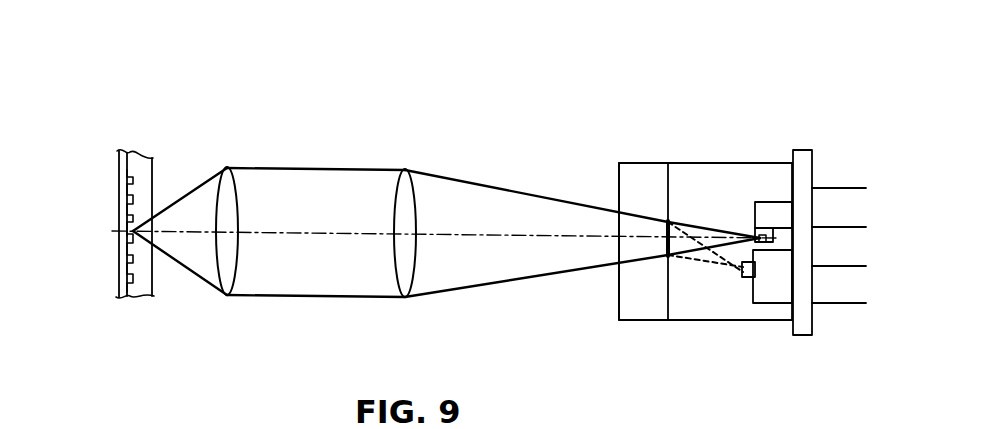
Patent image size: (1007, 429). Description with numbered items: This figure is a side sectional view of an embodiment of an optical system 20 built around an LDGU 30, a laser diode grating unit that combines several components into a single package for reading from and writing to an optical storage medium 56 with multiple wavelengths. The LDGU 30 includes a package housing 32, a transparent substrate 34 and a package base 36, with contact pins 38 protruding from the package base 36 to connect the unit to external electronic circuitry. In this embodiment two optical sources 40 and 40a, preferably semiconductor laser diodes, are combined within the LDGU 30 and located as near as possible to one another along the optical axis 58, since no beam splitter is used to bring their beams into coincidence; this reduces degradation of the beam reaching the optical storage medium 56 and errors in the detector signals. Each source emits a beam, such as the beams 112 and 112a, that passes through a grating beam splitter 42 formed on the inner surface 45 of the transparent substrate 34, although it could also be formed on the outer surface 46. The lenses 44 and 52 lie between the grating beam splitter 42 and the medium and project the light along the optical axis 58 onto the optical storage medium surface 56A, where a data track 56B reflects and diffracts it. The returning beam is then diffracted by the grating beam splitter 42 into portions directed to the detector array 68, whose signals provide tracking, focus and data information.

The optical system 20 is at (294, 195).
The LDGU 30 is at (705, 140).
The package housing 32 is at (733, 163).
The transparent substrate 34 is at (647, 163).
The package base 36 is at (803, 150).
The contact pins 38 is at (862, 266).
The optical source 40 is at (757, 237).
The optical source 40a is at (760, 235).
The grating beam splitter 42 is at (657, 247).
The lens 44 is at (405, 298).
The inner surface 45 is at (670, 303).
The outer surface 46 is at (620, 305).
The lens 52 is at (227, 167).
The optical storage medium 56 is at (101, 149).
The optical storage medium surface 56A is at (122, 288).
The data track 56B is at (131, 231).
The optical axis 58 is at (432, 240).
The detector array 68 is at (758, 272).
The light beam 112 is at (503, 280).
The light beam portion 112a is at (555, 200).